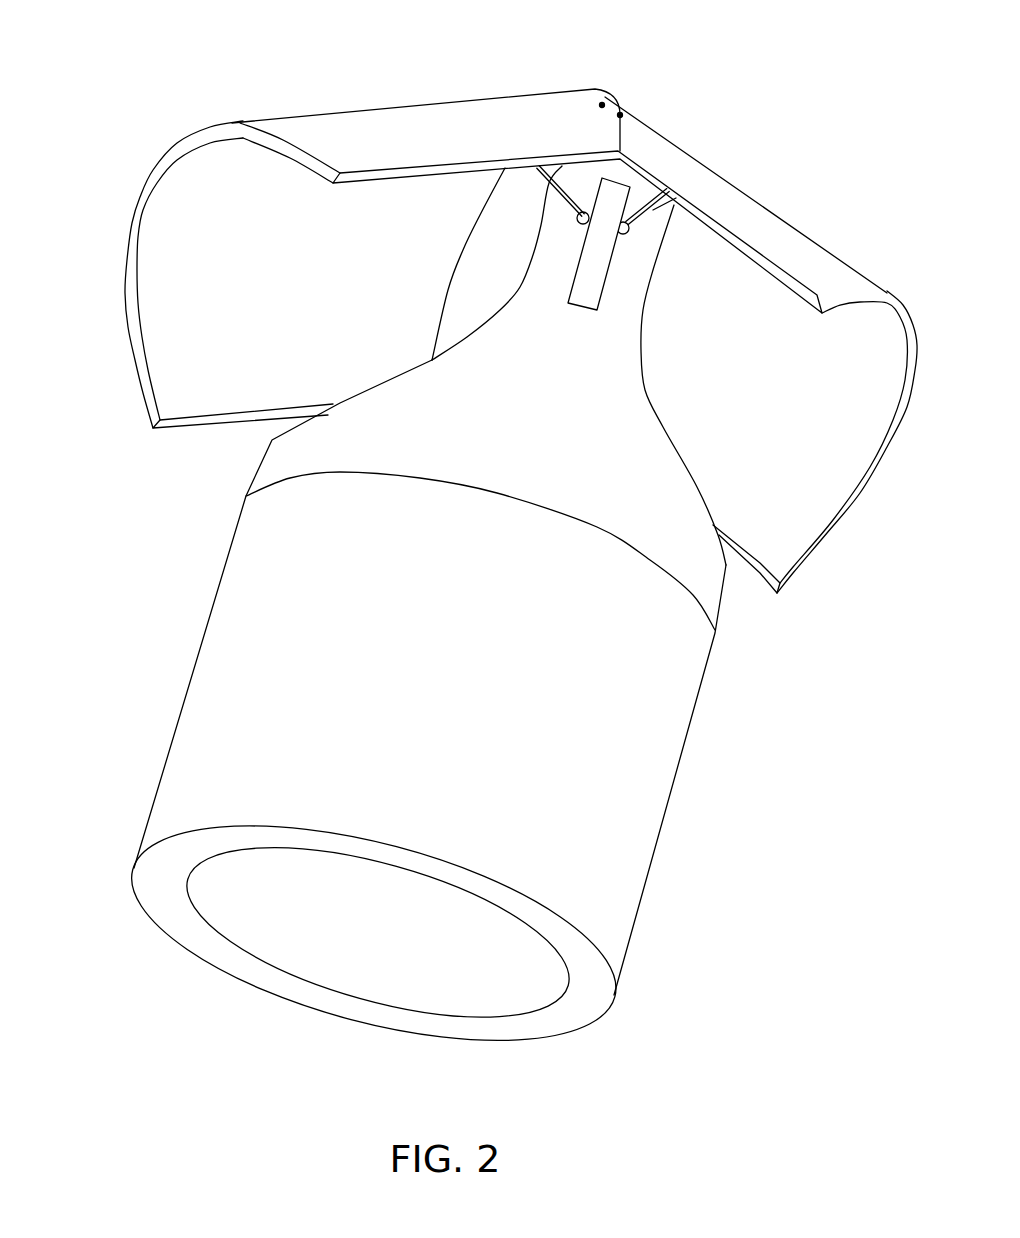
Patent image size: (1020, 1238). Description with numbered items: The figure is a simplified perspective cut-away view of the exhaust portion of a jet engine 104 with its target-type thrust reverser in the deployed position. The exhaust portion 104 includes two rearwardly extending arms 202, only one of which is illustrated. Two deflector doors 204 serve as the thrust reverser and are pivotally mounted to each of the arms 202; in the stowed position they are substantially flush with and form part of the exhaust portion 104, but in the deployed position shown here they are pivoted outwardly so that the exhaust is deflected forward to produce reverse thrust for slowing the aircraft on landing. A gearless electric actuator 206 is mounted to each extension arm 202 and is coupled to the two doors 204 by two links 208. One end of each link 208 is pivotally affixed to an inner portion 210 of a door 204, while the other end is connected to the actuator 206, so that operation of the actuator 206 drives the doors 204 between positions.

The jet engine exhaust portion 104 is at (214, 681).
The rearwardly extending arm 202 is at (523, 285).
The deflector door 204 is at (413, 118).
The gearless electric actuator 206 is at (597, 310).
The link 208 is at (555, 183).
The inner portion of door 210 is at (150, 237).